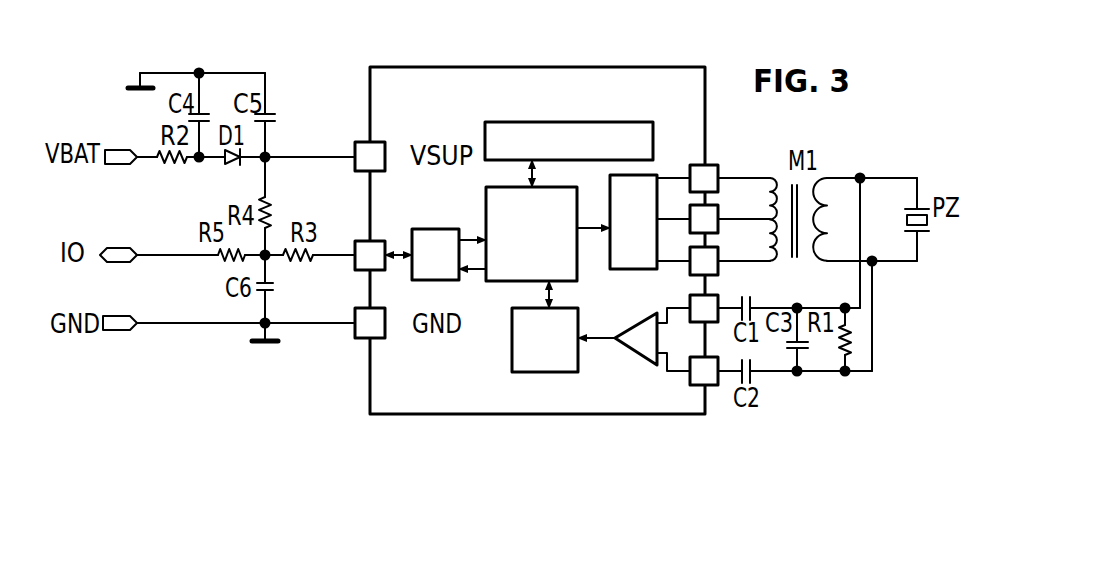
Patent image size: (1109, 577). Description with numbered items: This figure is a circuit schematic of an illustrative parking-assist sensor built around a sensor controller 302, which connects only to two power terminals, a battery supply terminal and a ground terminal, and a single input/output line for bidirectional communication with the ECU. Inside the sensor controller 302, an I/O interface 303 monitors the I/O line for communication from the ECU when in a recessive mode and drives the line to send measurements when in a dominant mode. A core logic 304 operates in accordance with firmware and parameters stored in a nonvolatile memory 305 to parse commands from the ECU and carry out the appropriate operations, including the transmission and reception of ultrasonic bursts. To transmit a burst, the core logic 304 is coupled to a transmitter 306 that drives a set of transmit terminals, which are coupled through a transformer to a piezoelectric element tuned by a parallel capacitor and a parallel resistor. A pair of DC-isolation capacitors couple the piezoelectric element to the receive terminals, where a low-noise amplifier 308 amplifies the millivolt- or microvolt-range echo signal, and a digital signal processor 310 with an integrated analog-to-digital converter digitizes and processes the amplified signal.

The sensor controller 302 is at (421, 414).
The I/O interface 303 is at (432, 229).
The core logic 304 is at (486, 219).
The nonvolatile memory 305 is at (485, 137).
The transmitter 306 is at (638, 270).
The low-noise amplifier 308 is at (640, 358).
The digital signal processor (DSP) 310 is at (511, 358).